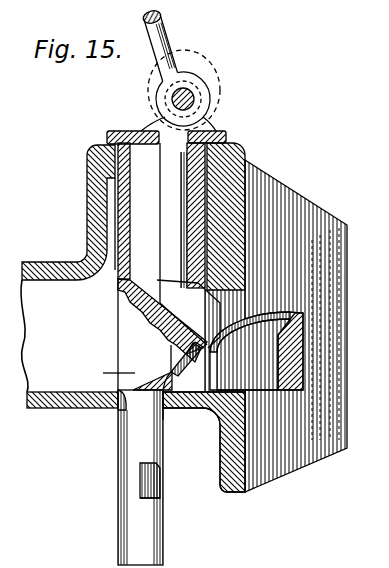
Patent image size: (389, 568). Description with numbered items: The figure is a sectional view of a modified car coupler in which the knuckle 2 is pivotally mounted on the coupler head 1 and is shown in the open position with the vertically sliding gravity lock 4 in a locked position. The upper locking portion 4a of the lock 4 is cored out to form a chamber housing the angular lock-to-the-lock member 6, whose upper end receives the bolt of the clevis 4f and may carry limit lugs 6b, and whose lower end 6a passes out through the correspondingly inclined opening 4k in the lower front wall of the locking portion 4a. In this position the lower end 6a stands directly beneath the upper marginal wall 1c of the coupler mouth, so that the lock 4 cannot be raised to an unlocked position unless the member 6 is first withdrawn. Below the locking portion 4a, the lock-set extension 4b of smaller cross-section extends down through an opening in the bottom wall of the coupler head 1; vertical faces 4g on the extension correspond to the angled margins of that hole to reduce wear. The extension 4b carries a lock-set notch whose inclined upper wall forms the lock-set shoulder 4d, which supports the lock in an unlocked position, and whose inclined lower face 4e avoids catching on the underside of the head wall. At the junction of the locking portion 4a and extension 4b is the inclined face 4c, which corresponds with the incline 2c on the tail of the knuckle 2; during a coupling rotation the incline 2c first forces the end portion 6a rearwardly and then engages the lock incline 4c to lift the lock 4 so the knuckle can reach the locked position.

The coupler head 1 is at (88, 215).
The upper marginal wall of coupler mouth 1c is at (242, 274).
The knuckle 2 is at (226, 396).
The incline 2c is at (292, 311).
The gravity lock 4 is at (228, 134).
The upper locking portion of lock 4a is at (115, 237).
The lock-set extension 4b is at (130, 447).
The inclined face of lock 4c is at (190, 358).
The lock-set shoulder 4d is at (158, 467).
The lower face of lock-set notch 4e is at (158, 498).
The clevis 4f is at (174, 37).
The vertical faces of lock-set extension 4g is at (118, 521).
The inclined opening 4k is at (178, 282).
The lock-to-the-lock member 6 is at (161, 186).
The lower end of lock-to-the-lock member 6a is at (187, 350).
The limit lugs 6b is at (228, 118).